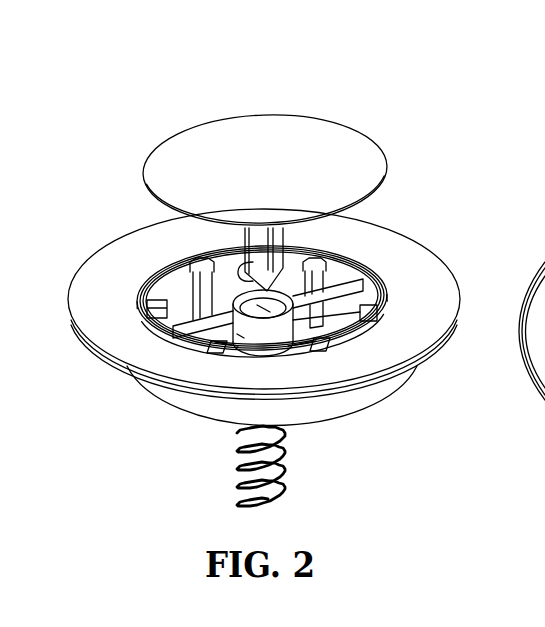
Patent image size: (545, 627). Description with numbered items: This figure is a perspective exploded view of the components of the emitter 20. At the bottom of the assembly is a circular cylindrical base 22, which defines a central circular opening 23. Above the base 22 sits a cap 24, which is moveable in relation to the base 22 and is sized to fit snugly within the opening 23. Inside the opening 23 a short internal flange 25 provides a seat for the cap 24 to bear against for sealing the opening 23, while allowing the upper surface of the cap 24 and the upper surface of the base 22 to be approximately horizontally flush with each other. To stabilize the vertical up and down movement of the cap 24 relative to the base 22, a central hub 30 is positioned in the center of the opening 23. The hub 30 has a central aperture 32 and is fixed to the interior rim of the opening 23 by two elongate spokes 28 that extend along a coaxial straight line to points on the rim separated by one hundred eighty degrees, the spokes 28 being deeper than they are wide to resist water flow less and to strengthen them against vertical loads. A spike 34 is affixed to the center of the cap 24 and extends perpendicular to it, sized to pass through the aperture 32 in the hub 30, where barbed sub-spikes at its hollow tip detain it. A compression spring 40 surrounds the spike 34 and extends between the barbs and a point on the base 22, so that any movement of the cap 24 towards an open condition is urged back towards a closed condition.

The emitter 20 is at (442, 110).
The base 22 is at (432, 368).
The central circular opening 23 is at (138, 320).
The cap 24 is at (273, 130).
The internal flange 25 is at (334, 257).
The elongate spokes 28 is at (199, 353).
The central hub 30 is at (283, 326).
The central aperture 32 is at (256, 350).
The spike 34 is at (180, 253).
The compression spring 40 is at (268, 499).